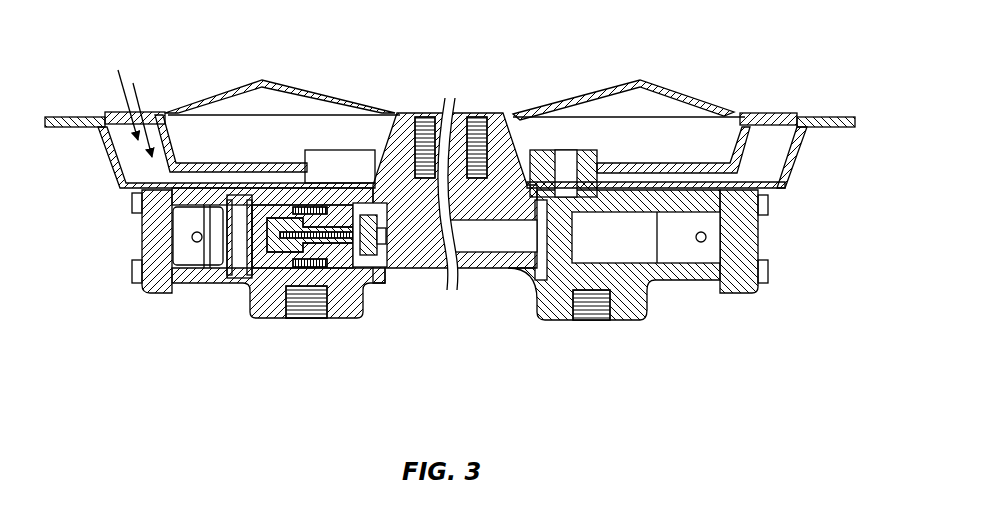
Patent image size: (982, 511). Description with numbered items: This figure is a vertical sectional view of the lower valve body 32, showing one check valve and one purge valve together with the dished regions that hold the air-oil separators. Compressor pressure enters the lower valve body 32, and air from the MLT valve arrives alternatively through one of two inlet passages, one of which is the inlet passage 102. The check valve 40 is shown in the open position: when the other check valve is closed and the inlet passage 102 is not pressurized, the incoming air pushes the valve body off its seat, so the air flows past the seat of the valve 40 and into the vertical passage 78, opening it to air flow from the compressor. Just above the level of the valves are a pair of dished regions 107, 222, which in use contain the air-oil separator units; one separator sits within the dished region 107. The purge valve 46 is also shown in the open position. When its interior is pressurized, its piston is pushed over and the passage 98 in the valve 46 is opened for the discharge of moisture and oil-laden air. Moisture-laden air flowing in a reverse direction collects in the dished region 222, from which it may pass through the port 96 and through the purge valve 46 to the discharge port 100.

The lower valve body 32 is at (403, 238).
The valve 40 is at (763, 237).
The purge valve 46 is at (180, 305).
The vertical passage 78 is at (560, 190).
The port 96 is at (358, 200).
The passage 98 is at (333, 220).
The discharge port 100 is at (307, 328).
The inlet passage 102 is at (700, 243).
The dished region 107 is at (755, 145).
The dished region 222 is at (122, 142).